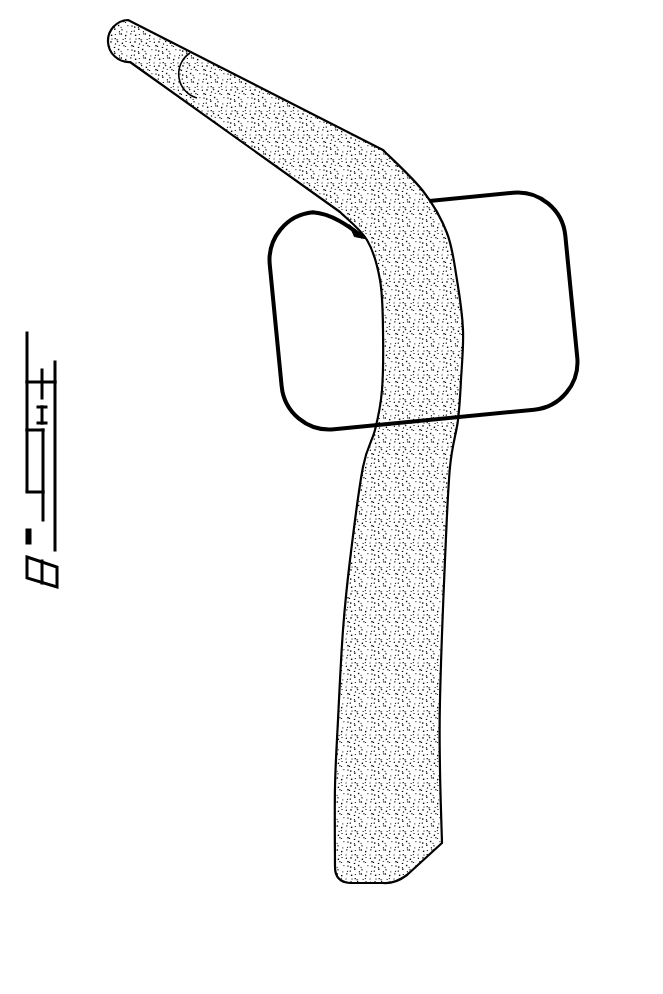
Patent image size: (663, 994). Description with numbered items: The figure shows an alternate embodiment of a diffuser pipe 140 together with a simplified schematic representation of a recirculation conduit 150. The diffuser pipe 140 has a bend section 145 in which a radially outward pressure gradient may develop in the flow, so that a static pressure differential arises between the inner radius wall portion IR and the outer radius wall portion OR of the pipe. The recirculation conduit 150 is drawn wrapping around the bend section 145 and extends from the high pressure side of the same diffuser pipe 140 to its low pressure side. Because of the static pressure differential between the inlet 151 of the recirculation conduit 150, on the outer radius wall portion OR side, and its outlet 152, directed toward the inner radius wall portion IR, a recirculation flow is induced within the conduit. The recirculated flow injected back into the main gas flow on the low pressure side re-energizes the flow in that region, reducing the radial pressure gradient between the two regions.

The diffuser pipe 140 is at (482, 787).
The bend section 145 is at (422, 167).
The recirculation conduit 150 is at (461, 323).
The inlet 151 is at (428, 200).
The outlet 152 is at (364, 243).
The outer radius wall portion OR is at (383, 150).
The inner radius wall portion IR is at (305, 178).